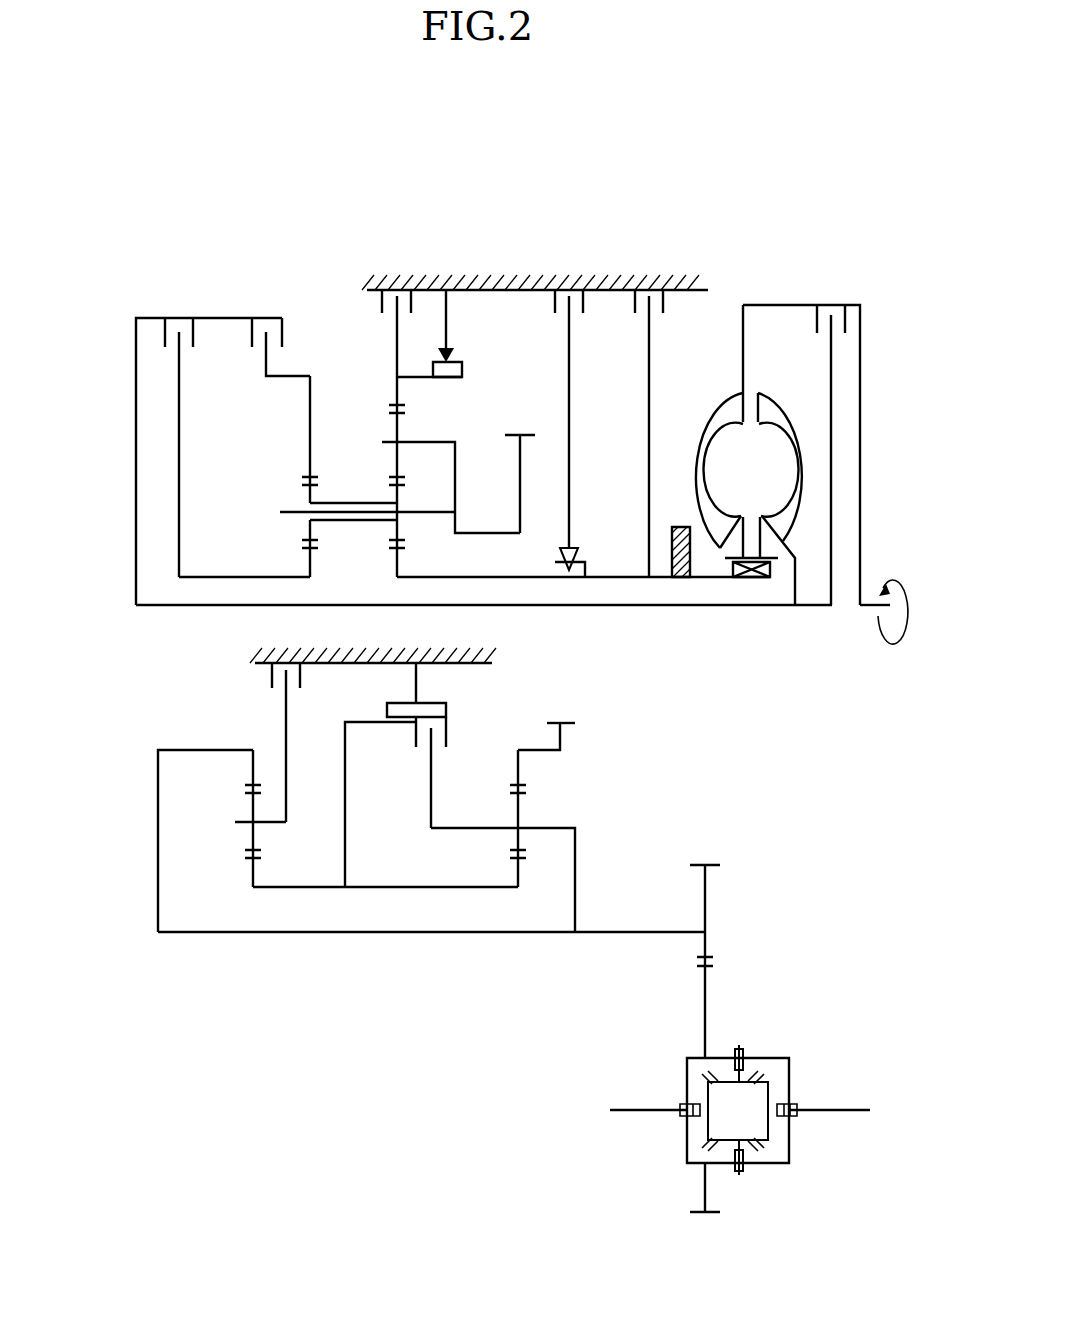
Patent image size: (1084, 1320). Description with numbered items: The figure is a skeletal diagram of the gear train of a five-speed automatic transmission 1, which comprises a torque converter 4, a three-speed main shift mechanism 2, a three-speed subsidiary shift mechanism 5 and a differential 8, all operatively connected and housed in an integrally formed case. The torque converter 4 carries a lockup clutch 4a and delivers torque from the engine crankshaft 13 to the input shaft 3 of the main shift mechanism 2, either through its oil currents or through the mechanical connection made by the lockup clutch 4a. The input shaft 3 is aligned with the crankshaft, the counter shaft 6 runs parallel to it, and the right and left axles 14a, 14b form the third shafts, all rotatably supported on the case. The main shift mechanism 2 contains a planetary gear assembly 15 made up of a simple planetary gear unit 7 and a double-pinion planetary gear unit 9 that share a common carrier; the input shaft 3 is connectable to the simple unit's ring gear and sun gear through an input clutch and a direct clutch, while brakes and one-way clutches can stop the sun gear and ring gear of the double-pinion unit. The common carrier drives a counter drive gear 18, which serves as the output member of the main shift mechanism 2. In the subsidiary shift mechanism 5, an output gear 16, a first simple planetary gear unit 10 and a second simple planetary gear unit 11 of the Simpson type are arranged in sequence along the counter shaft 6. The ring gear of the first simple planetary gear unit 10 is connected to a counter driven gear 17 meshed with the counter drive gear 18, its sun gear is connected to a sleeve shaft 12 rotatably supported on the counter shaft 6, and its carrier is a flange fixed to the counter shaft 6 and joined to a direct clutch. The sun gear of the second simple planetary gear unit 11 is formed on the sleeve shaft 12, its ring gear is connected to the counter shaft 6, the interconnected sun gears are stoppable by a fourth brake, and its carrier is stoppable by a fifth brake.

The automatic transmission 1 is at (504, 187).
The main shift mechanism 2 is at (620, 234).
The input shaft 3 is at (605, 606).
The torque converter 4 is at (748, 300).
The lockup clutch 4a is at (838, 318).
The subsidiary shift mechanism 5 is at (115, 706).
The counter shaft 6 is at (447, 935).
The simple planetary gear unit 7 is at (310, 360).
The differential 8 is at (836, 1027).
The double-pinion planetary gear unit 9 is at (380, 373).
The first simple planetary gear unit 10 is at (562, 785).
The second simple planetary gear unit 11 is at (137, 827).
The sleeve shaft 12 is at (388, 888).
The engine crankshaft 13 is at (878, 610).
The right axle 14a is at (649, 1110).
The left axle 14b is at (832, 1112).
The planetary gear assembly 15 is at (225, 227).
The output gear 16 is at (706, 882).
The counter driven gear 17 is at (568, 726).
The counter drive gear 18 is at (522, 455).